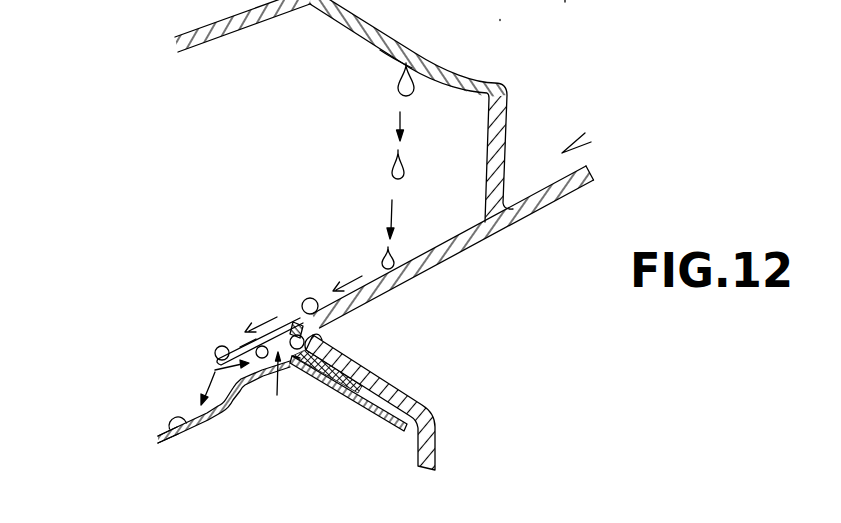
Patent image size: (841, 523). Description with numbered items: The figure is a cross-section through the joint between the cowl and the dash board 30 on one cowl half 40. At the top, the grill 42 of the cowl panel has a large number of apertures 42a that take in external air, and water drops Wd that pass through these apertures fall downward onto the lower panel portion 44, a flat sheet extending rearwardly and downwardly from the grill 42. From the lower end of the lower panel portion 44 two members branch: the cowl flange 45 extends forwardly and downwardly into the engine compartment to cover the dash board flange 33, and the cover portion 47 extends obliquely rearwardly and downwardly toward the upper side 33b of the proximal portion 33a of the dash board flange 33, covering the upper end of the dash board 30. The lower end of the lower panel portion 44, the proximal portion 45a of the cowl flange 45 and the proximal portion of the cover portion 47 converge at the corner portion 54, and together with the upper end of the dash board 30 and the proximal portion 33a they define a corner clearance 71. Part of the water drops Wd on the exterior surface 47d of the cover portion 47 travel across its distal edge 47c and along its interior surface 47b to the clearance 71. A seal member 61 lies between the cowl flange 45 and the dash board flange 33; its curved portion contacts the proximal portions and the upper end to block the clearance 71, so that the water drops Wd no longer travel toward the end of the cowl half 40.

The grill 42 is at (452, 72).
The apertures 42a is at (394, 50).
The water drops wd is at (400, 90).
The cowl half 40 is at (563, 152).
The lower panel portion 44 is at (437, 262).
The corner portion 54 is at (302, 312).
The cover portion 47 is at (240, 340).
The interior surface 47b is at (285, 368).
The distal edge 47c is at (215, 352).
The exterior surface 47d is at (245, 338).
The cowl flange 45 is at (422, 406).
The proximal portion of the cowl flange 45a is at (320, 334).
The seal member 61 is at (366, 372).
The dash board flange 33 is at (378, 412).
The proximal portion of the dash board flange 33a is at (300, 370).
The upper side 33b is at (246, 396).
The dash board 30 is at (172, 442).
The corner clearance 71 is at (277, 395).